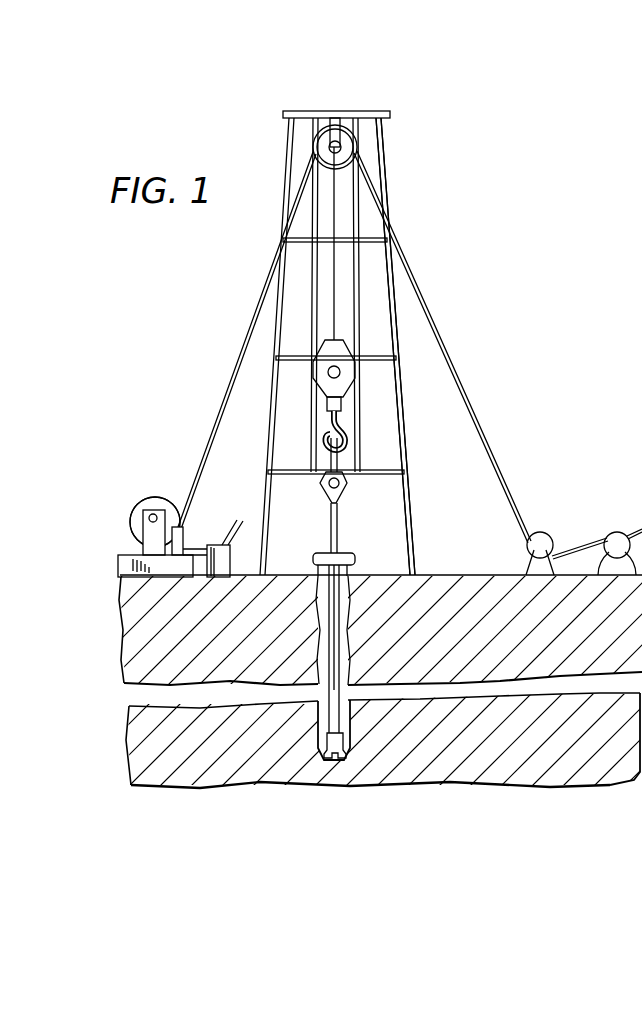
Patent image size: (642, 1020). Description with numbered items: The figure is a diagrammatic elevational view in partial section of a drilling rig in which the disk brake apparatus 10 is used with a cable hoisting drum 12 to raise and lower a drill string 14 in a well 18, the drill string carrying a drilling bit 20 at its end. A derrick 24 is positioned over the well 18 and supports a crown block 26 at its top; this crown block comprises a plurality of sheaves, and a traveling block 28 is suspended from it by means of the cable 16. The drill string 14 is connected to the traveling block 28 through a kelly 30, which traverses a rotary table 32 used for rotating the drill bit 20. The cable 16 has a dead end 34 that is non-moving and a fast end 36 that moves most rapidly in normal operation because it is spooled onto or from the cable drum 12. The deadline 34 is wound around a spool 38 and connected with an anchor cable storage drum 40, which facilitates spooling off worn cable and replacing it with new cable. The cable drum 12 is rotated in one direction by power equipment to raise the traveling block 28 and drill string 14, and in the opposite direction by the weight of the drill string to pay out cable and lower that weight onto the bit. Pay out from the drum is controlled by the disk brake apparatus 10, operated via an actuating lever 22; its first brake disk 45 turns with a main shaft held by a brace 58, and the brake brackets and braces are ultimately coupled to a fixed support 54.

The disk brake apparatus 10 is at (192, 515).
The cable hoisting drum 12 is at (155, 482).
The drill string 14 is at (343, 667).
The cable 16 is at (256, 292).
The well 18 is at (353, 614).
The drilling bit 20 is at (346, 754).
The actuating lever 22 is at (227, 523).
The derrick 24 is at (386, 144).
The crown block 26 is at (345, 128).
The traveling block 28 is at (353, 377).
The kelly 30 is at (338, 526).
The rotary table 32 is at (357, 561).
The dead end 34 is at (499, 462).
The fast end 36 is at (236, 355).
The spool 38 is at (552, 538).
The anchor cable storage drum 40 is at (620, 534).
The first brake disk 45 is at (144, 515).
The fixed support 54 is at (158, 582).
The brace 58 is at (143, 530).